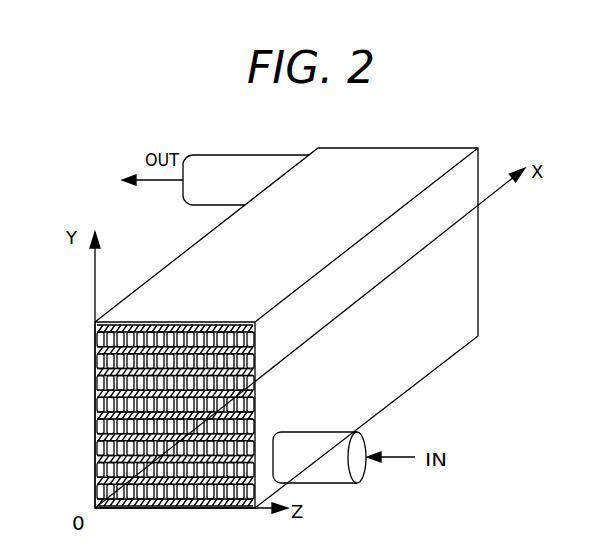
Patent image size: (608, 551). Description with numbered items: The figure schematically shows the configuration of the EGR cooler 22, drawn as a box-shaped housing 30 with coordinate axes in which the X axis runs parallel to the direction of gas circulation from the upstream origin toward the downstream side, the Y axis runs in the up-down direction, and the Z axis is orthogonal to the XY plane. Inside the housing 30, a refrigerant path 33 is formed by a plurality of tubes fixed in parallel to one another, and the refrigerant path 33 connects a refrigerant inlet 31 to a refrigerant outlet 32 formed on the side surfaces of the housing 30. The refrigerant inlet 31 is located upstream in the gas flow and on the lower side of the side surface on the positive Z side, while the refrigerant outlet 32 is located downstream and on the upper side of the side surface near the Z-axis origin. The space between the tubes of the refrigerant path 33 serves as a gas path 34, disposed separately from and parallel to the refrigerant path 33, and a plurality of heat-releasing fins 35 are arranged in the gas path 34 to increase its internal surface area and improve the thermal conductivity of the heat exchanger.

The EGR cooler 22 is at (281, 320).
The housing 30 is at (467, 292).
The refrigerant inlet 31 is at (335, 470).
The refrigerant outlet 32 is at (224, 170).
The refrigerant path 33 is at (95, 325).
The gas path 34 is at (95, 368).
The fin 35 is at (95, 342).